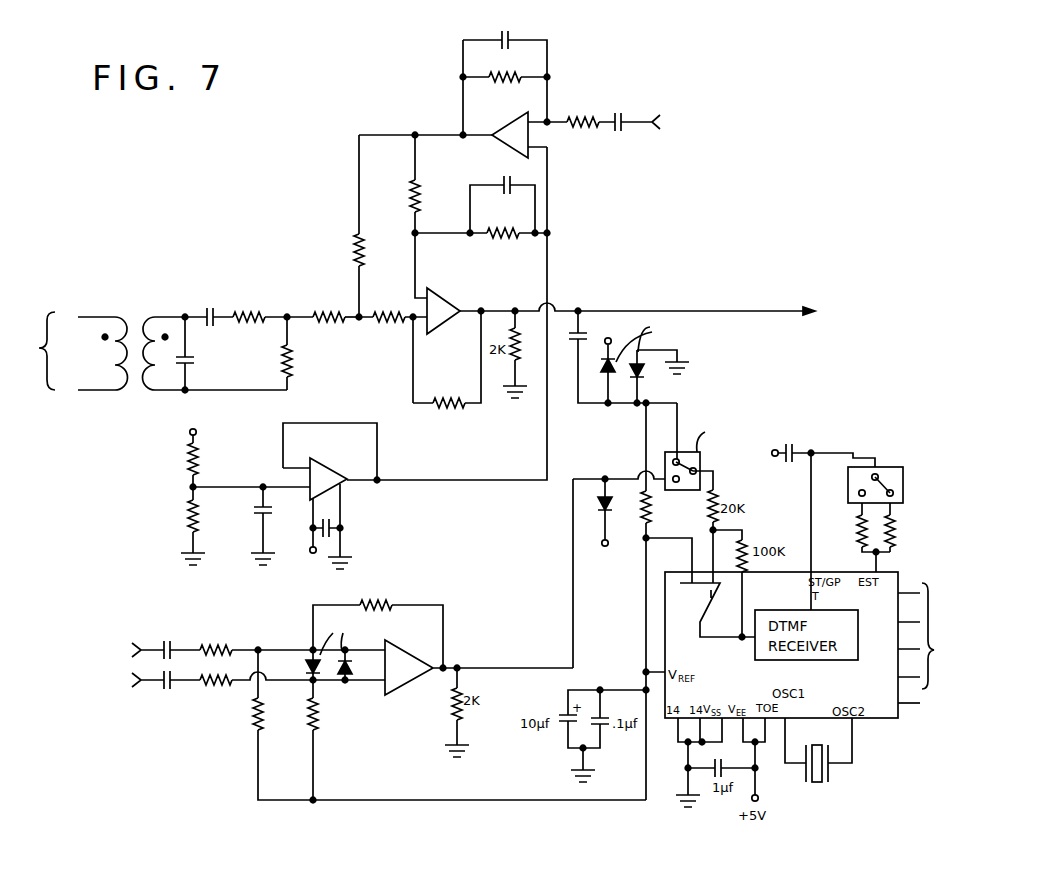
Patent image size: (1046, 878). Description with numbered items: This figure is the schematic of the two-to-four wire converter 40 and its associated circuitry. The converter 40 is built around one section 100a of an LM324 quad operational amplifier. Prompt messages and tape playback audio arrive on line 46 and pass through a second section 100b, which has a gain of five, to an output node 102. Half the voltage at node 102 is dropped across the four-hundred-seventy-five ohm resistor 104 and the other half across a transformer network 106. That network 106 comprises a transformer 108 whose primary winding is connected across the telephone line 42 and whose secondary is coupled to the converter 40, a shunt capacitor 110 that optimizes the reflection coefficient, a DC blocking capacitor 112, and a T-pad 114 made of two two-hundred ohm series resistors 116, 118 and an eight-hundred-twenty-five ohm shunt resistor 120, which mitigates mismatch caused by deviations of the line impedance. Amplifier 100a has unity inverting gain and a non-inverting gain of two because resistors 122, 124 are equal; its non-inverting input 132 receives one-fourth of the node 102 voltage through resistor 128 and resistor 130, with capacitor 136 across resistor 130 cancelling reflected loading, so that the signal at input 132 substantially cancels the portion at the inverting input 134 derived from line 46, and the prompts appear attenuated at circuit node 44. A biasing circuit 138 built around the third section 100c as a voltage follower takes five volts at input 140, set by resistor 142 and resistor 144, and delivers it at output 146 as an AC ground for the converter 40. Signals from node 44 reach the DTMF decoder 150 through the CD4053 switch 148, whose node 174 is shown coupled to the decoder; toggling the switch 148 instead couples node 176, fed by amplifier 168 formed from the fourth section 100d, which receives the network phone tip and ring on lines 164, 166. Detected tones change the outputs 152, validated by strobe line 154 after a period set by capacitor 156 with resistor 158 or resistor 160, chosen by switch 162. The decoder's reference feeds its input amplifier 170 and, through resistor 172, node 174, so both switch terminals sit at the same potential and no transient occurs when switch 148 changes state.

The two-to-four wire converter 40 is at (600, 243).
The telephone line 42 is at (41, 317).
The circuit node 44 is at (752, 309).
The line 46 is at (547, 120).
The operational amplifier section 100a is at (445, 334).
The operational amplifier section 100b is at (533, 133).
The operational amplifier section 100c is at (352, 486).
The operational amplifier section 100d is at (408, 684).
The output node 102 is at (382, 133).
The resistor 104 is at (355, 235).
The transformer network 106 is at (232, 270).
The transformer 108 is at (132, 311).
The shunt capacitor 110 is at (193, 356).
The DC blocking capacitor 112 is at (204, 311).
The T-pad 114 is at (335, 372).
The series resistor 116 is at (262, 312).
The series resistor 118 is at (329, 322).
The shunt resistor 120 is at (291, 352).
The resistor 122 is at (385, 322).
The resistor 124 is at (459, 408).
The resistor 128 is at (412, 183).
The resistor 130 is at (485, 238).
The non-inverting input 132 is at (413, 265).
The inverting input 134 is at (414, 340).
The capacitor 136 is at (504, 192).
The biasing circuit 138 is at (393, 518).
The input 140 is at (190, 487).
The resistor 142 is at (215, 452).
The resistor 144 is at (183, 518).
The biasing circuit output 146 is at (502, 482).
The CD4053 switch 148 is at (686, 493).
The DTMF decoder 150 is at (876, 720).
The outputs 152 is at (923, 636).
The strobe line 154 is at (908, 703).
The capacitor 156 is at (803, 445).
The resistor 158 is at (904, 514).
The resistor 160 is at (856, 545).
The switch 162 is at (898, 465).
The line 164 is at (133, 650).
The line 166 is at (133, 685).
The amplifier 168 is at (362, 742).
The input operational amplifier 170 is at (690, 602).
The resistor 172 is at (642, 514).
The node 174 is at (646, 403).
The node 176 is at (623, 475).